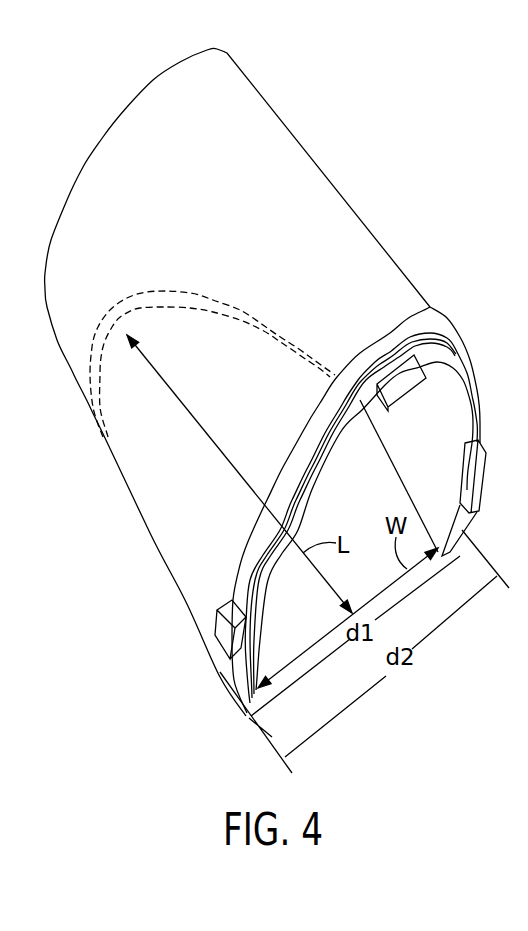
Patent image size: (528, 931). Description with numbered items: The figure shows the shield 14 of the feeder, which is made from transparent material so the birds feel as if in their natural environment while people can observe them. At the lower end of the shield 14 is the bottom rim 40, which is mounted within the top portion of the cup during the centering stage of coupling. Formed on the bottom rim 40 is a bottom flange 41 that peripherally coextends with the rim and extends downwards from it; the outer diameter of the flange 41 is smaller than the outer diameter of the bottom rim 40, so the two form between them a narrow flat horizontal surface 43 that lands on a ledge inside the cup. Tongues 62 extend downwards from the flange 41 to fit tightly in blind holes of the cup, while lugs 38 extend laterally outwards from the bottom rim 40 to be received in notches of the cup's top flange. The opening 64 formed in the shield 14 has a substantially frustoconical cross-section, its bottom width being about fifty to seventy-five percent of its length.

The shield 14 is at (363, 116).
The bottom rim 40 is at (430, 306).
The bottom flange 41 is at (451, 335).
The narrow flat horizontal surface 43 is at (242, 558).
The lugs 38 is at (222, 637).
The tongues 62 is at (396, 382).
The opening 64 is at (340, 464).